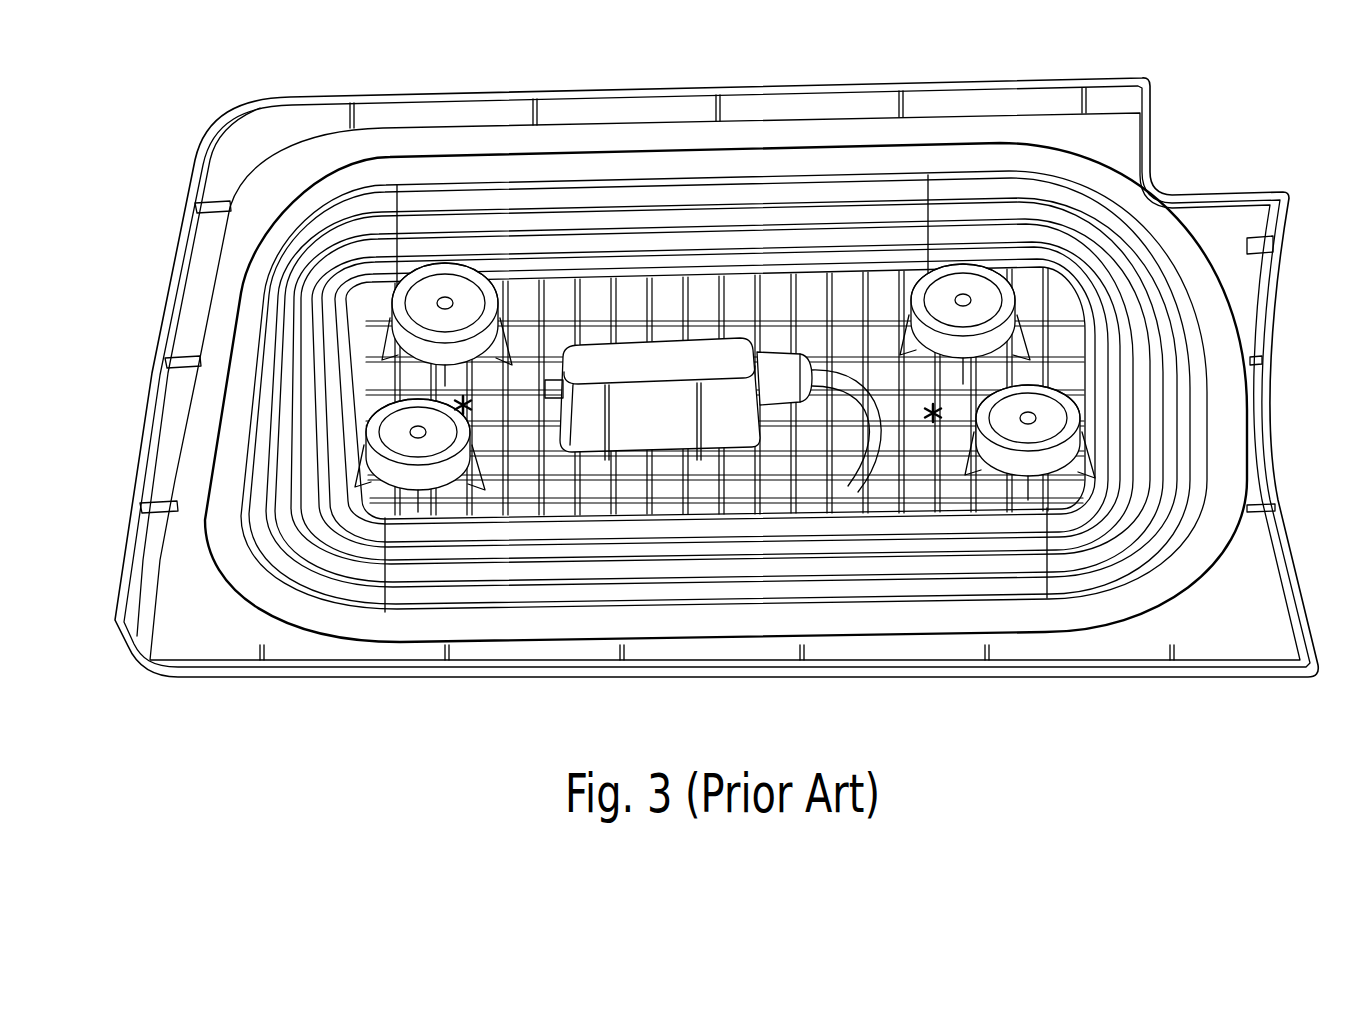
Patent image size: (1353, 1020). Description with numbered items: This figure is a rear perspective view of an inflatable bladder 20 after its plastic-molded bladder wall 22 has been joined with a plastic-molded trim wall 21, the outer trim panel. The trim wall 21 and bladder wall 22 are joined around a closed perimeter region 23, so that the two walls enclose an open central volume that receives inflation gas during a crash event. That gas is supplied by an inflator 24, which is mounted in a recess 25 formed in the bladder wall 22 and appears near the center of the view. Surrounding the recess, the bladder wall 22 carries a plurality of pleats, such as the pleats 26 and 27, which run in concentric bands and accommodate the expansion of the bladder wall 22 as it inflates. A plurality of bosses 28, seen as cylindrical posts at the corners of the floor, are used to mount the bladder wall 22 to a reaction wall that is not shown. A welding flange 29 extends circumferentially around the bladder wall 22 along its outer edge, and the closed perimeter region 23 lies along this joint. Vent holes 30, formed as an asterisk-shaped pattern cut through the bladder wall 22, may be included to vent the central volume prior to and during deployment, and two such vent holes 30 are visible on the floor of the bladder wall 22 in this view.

The inflatable bladder 20 is at (204, 94).
The trim wall 21 is at (409, 139).
The bladder wall 22 is at (484, 176).
The closed perimeter region 23 is at (911, 158).
The inflator 24 is at (778, 356).
The recess 25 is at (732, 357).
The pleat 26 is at (1002, 240).
The pleat 27 is at (1093, 230).
The bosses 28 is at (1050, 410).
The welding flange 29 is at (615, 160).
The vent holes 30 is at (471, 407).